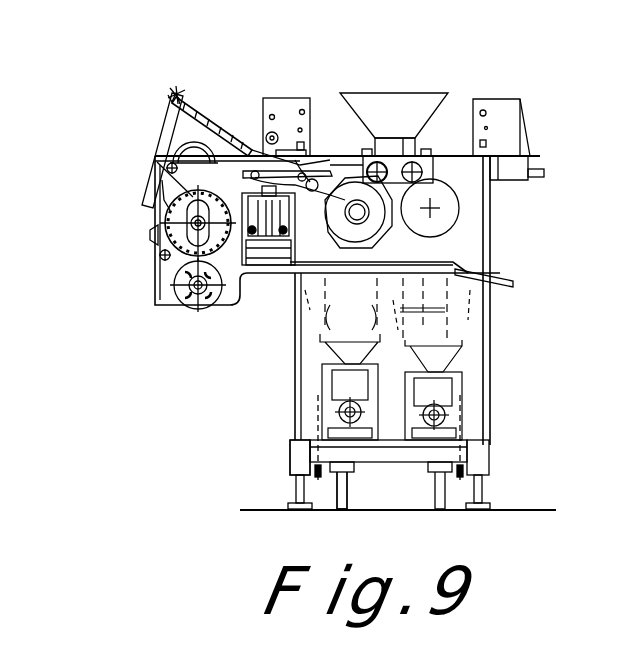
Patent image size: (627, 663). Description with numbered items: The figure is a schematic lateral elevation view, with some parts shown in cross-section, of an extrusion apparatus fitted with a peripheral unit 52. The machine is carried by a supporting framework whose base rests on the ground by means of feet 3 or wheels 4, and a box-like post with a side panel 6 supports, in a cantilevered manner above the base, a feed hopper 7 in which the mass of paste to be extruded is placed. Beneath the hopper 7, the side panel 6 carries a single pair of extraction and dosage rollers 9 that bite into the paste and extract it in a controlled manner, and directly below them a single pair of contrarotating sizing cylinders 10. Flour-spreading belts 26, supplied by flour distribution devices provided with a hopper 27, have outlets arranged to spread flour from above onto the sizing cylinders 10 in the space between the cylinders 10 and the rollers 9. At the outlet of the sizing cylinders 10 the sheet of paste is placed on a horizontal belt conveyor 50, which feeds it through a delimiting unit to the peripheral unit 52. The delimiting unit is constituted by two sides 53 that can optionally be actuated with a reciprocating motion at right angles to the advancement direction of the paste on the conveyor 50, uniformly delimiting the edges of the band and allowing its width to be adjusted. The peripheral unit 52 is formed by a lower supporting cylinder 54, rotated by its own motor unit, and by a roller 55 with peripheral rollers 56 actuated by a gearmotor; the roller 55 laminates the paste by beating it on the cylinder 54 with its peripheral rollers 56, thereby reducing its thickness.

The feet 3 is at (297, 503).
The wheels 4 is at (350, 498).
The side panel 6 is at (307, 387).
The feed hopper 7 is at (413, 113).
The extraction and dosage rollers 9 is at (370, 160).
The sizing cylinders 10 is at (452, 217).
The flour-spreading belts 26 is at (320, 168).
The hopper 27 is at (521, 106).
The horizontal belt conveyor 50 is at (483, 283).
The peripheral unit 52 is at (131, 288).
The sides 53 is at (268, 247).
The lower supporting cylinder 54 is at (183, 300).
The roller 55 is at (185, 190).
The peripheral rollers 56 is at (218, 195).